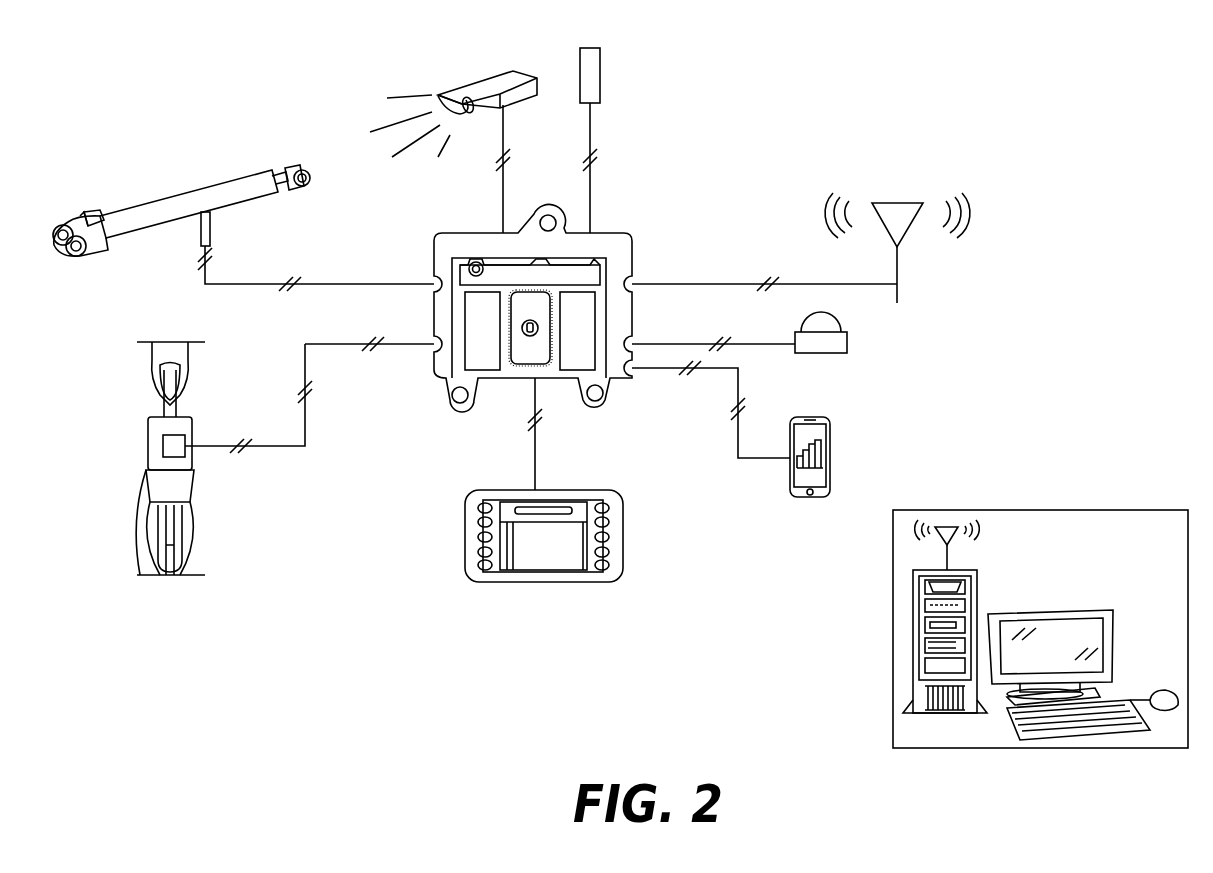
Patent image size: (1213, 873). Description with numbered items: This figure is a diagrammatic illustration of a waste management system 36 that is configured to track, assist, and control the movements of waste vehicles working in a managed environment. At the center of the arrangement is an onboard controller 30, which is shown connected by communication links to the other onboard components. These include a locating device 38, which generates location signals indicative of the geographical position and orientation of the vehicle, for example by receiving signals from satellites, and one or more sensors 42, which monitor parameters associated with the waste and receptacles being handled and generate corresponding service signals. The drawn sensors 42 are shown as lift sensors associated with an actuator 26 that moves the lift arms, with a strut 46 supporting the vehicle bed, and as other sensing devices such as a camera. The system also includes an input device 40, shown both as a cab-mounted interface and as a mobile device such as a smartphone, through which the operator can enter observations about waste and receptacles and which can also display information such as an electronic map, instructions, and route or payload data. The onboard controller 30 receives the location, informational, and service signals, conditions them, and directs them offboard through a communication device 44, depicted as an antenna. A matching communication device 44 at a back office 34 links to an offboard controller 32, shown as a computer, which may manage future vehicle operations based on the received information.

The actuator 26 is at (140, 206).
The onboard controller 30 is at (628, 246).
The offboard controller 32 is at (977, 598).
The back office 34 is at (1012, 629).
The waste management system 36 is at (860, 76).
The locating device 38 is at (847, 344).
The input device 40 is at (830, 445).
The sensor 42 is at (212, 232).
The communication device 44 is at (897, 265).
The strut 46 is at (194, 480).